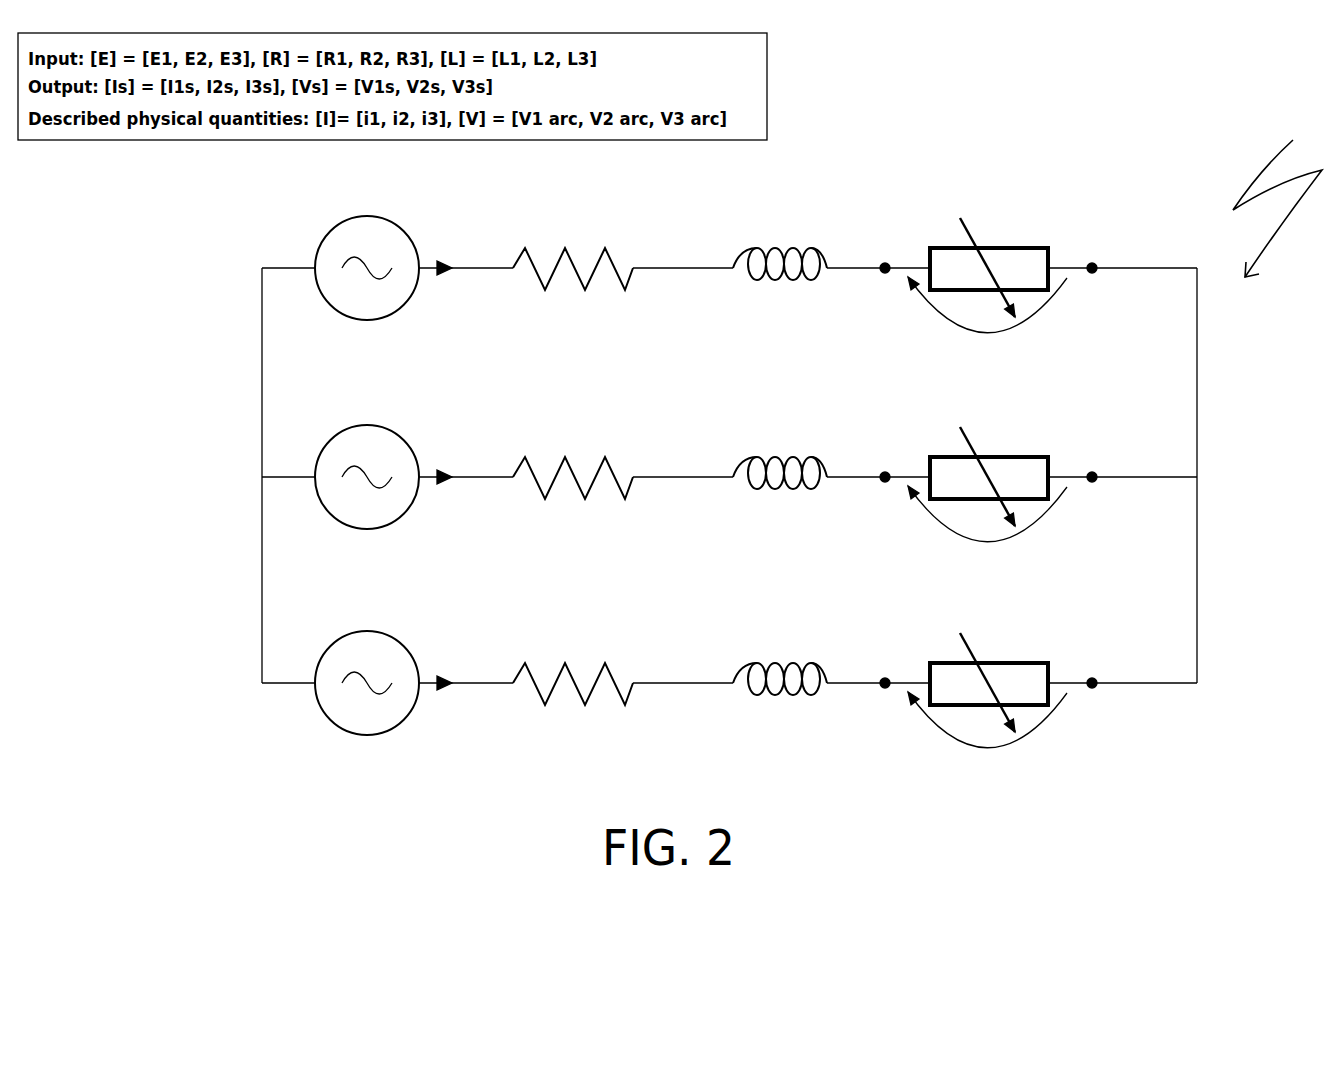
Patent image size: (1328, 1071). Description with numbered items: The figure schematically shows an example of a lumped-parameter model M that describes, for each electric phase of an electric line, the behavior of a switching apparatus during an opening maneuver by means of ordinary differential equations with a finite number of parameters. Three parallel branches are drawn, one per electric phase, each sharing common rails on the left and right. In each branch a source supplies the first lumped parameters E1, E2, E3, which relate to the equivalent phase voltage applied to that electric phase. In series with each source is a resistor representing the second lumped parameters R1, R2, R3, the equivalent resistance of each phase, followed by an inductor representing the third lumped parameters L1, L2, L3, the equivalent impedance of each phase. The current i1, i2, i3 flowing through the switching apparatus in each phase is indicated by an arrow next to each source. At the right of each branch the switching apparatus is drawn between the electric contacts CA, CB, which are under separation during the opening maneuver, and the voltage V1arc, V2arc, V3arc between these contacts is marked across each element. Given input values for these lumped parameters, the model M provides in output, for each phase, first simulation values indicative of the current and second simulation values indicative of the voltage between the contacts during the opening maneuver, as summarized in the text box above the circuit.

The first lumped parameter E1 is at (367, 240).
The first lumped parameter E2 is at (367, 449).
The first lumped parameter E3 is at (367, 655).
The second lumped parameter R1 is at (573, 242).
The second lumped parameter R2 is at (573, 451).
The second lumped parameter R3 is at (573, 657).
The third lumped parameter L1 is at (780, 239).
The third lumped parameter L2 is at (780, 448).
The third lumped parameter L3 is at (780, 654).
The current i1 is at (440, 248).
The current i2 is at (440, 457).
The current i3 is at (440, 663).
The voltage V1arc is at (987, 309).
The voltage V2arc is at (987, 518).
The voltage V3arc is at (987, 724).
The electric contact CA is at (883, 240).
The electric contact CB is at (1092, 240).
The lumped-parameter model M is at (1277, 197).